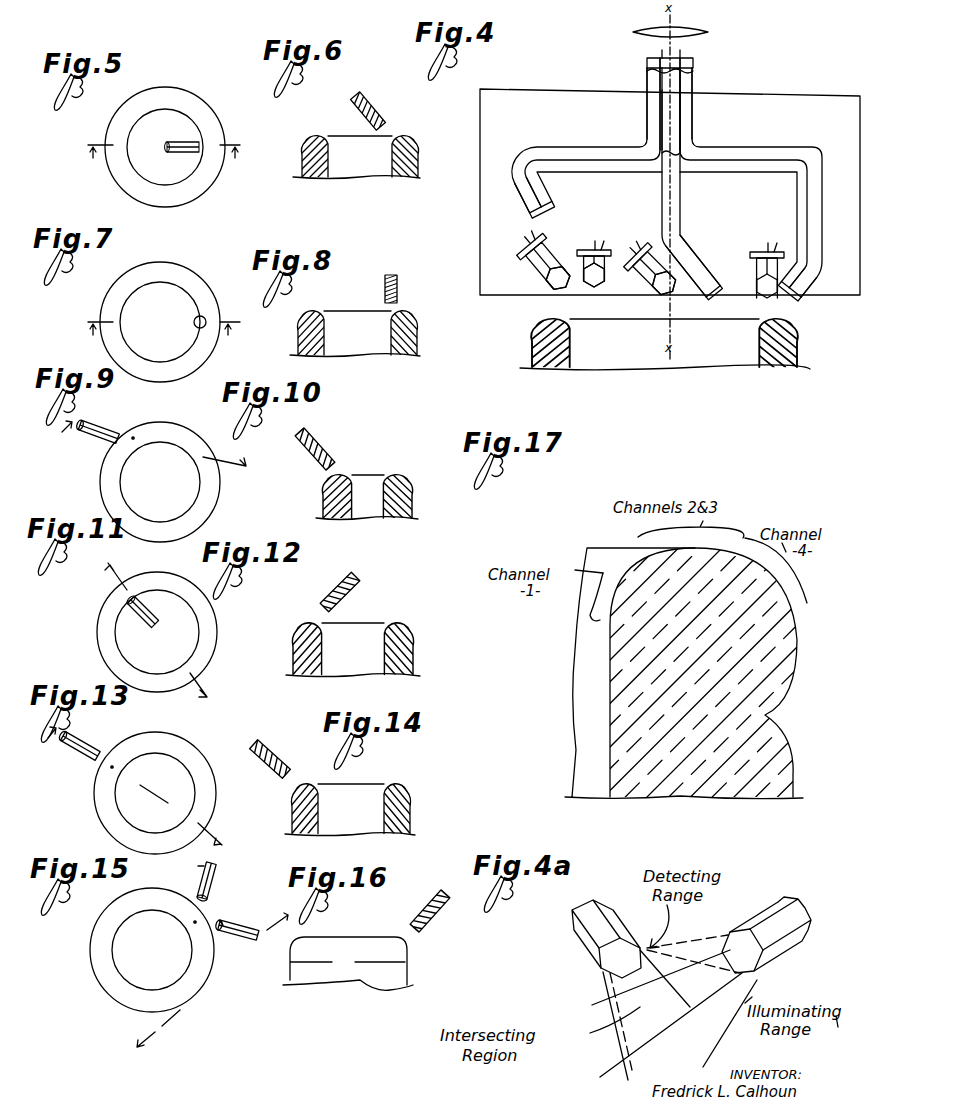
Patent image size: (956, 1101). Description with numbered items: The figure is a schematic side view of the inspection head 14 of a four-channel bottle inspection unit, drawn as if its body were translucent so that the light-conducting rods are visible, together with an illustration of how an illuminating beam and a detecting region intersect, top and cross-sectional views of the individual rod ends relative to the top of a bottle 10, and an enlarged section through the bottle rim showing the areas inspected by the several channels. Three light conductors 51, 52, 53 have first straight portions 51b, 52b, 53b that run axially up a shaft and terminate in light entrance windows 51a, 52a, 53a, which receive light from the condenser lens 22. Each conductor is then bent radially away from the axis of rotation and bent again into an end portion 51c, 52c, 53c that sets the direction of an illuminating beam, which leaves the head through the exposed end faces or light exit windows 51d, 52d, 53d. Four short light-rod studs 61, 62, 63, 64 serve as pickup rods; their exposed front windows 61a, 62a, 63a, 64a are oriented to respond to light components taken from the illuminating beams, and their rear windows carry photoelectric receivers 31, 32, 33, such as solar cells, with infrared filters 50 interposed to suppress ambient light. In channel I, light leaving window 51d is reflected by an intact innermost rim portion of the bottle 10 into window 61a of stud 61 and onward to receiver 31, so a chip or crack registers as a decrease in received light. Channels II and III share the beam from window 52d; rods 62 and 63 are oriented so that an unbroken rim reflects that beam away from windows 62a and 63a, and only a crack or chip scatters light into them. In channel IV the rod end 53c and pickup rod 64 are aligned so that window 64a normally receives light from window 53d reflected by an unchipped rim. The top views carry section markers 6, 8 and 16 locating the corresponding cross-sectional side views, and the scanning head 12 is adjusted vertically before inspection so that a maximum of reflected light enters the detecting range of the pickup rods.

In FIG. 4, the condenser lens 22 is at (706, 34).
In FIG. 4, the light entrance window 51a is at (663, 58).
In FIG. 4, the light entrance window 52a is at (648, 58).
In FIG. 4, the light entrance window 53a is at (693, 58).
In FIG. 4, the first straight portion 52b is at (647, 80).
In FIG. 4, the first straight portion 53b is at (692, 84).
In FIG. 4, the first straight portion 51b is at (664, 85).
In FIG. 4, the light conductor 52 is at (604, 160).
In FIG. 4, the light conductor 53 is at (752, 164).
In FIG. 4, the rod end portion 52c is at (545, 196).
In FIG. 9, the rod end portion 52c is at (102, 430).
In FIG. 4, the light exit window 52d is at (524, 205).
In FIG. 10, the light exit window 52d is at (333, 462).
In FIG. 4, the light conductor 51 is at (681, 203).
In FIG. 5, the rod end portion 51c is at (185, 142).
In FIG. 4, the rod end portion 51c is at (690, 257).
In FIG. 6, the light exit window 51d is at (381, 126).
In FIG. 4, the light exit window 51d is at (712, 290).
In FIG. 4a, the light exit window 51d is at (752, 976).
In FIG. 4, the rod end portion 53c is at (812, 266).
In FIG. 15, the rod end portion 53c is at (196, 874).
In FIG. 4, the light exit window 53d is at (790, 298).
In FIG. 15, the light exit window 53d is at (212, 900).
In FIG. 4, the infrared filter 50 is at (545, 233).
In FIG. 4, the photoelectric receiver 33 is at (528, 238).
In FIG. 4, the photoelectric receiver 32 is at (603, 250).
In FIG. 4, the photoelectric receiver 31 is at (776, 246).
In FIG. 4, the light-rod stud 63 is at (533, 262).
In FIG. 13, the light-rod stud 63 is at (75, 758).
In FIG. 4, the light-rod stud 62 is at (585, 266).
In FIG. 11, the light-rod stud 62 is at (140, 615).
In FIG. 4, the light-rod stud 64 is at (648, 289).
In FIG. 15, the light-rod stud 64 is at (235, 940).
In FIG. 4, the light-rod stud 61 is at (755, 270).
In FIG. 7, the light-rod stud 61 is at (206, 320).
In FIG. 4, the front window 63a is at (552, 286).
In FIG. 14, the front window 63a is at (288, 770).
In FIG. 4, the front window 62a is at (593, 287).
In FIG. 12, the front window 62a is at (328, 602).
In FIG. 4, the front window 64a is at (676, 285).
In FIG. 15, the front window 64a is at (222, 920).
In FIG. 16, the front window 64a is at (420, 930).
In FIG. 4, the front window 61a is at (770, 298).
In FIG. 8, the front window 61a is at (398, 305).
In FIG. 4a, the front window 61a is at (603, 972).
In FIG. 9, the bottle 10 is at (149, 458).
In FIG. 17, the bottle 10 is at (718, 671).
In FIG. 5, the section line 6- 6 is at (162, 165).
In FIG. 7, the section line 8- 8 is at (161, 340).
In FIG. 11, the scanning head 12 is at (145, 641).
In FIG. 13, the inspection head 14 is at (136, 793).
In FIG. 15, the section line 16- 16 is at (212, 991).